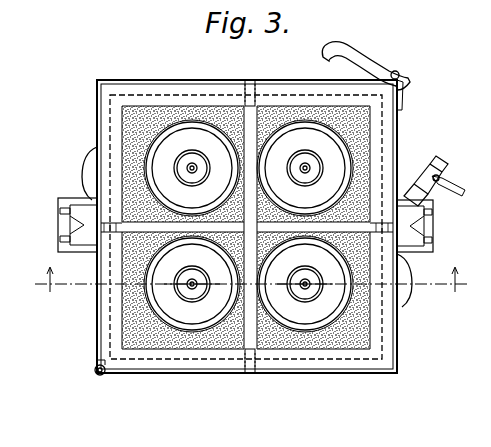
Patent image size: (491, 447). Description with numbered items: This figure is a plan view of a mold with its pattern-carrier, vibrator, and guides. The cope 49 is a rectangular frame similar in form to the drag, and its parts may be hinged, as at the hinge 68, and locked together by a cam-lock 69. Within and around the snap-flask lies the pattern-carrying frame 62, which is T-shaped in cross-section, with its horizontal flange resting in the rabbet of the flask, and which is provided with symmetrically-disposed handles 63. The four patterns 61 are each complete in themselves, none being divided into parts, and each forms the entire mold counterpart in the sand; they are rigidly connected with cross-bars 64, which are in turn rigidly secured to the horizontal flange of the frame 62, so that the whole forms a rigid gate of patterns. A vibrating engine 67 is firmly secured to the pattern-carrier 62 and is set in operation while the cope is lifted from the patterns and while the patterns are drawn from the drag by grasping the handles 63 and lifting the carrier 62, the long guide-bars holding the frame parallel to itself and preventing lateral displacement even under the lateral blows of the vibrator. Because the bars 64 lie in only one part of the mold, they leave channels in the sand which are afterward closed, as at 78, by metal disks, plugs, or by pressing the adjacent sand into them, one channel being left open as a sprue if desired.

The cope 49 is at (160, 102).
The patterns 61 is at (248, 226).
The frame 62 is at (97, 95).
The handles 63 is at (88, 166).
The cross-bars 64 is at (212, 216).
The vibrating engine 67 is at (436, 170).
The hinge 68 is at (97, 378).
The cam-lock 69 is at (397, 72).
The closed channels 78 is at (256, 150).